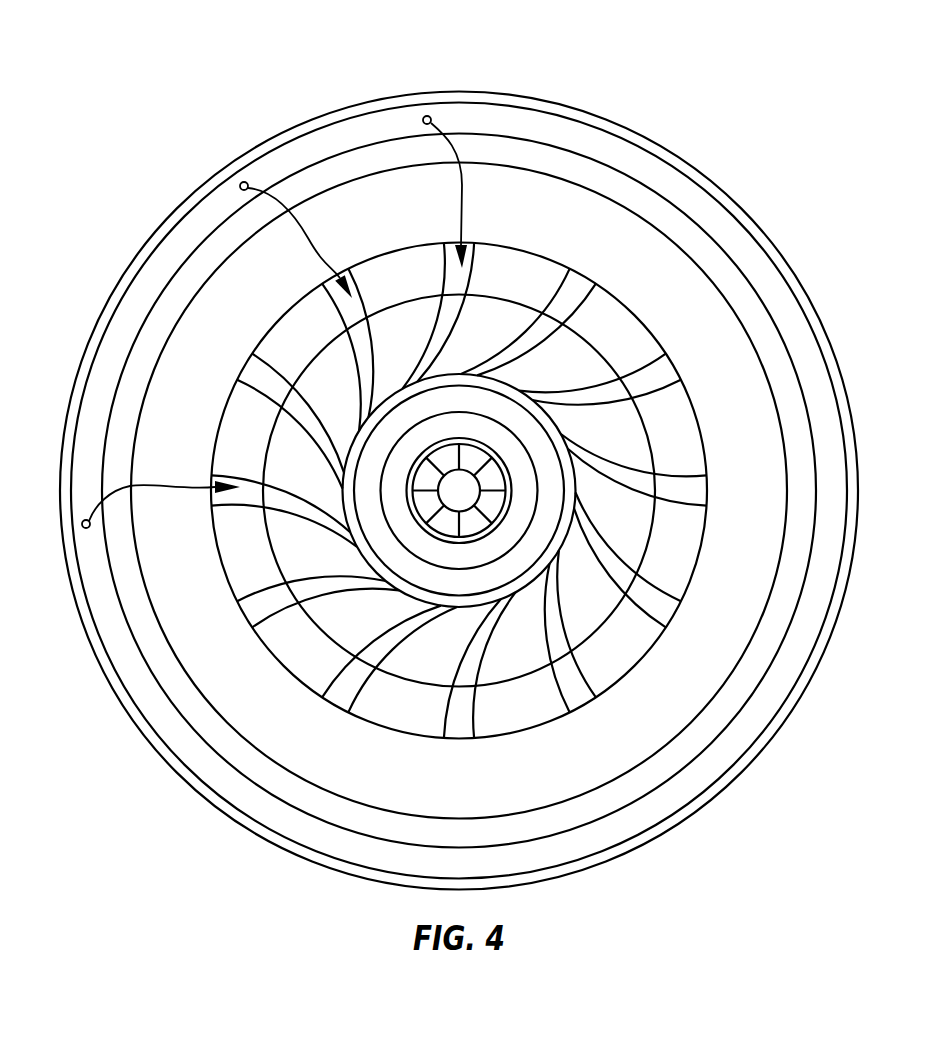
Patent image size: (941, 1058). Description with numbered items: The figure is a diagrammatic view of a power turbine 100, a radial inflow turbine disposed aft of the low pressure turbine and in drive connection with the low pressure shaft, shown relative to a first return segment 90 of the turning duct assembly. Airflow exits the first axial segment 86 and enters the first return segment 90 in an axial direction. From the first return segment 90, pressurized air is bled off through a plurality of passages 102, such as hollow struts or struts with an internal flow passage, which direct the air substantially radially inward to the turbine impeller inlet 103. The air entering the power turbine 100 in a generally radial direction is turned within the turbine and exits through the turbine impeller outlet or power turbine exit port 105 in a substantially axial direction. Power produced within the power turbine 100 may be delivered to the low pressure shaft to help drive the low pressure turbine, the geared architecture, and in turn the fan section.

The power turbine 100 is at (839, 116).
The first axial segment 86 is at (622, 150).
The first return segment 90 is at (660, 267).
The passages 102 is at (668, 620).
The turbine impeller inlet 103 is at (440, 378).
The power turbine exit port 105 is at (437, 535).